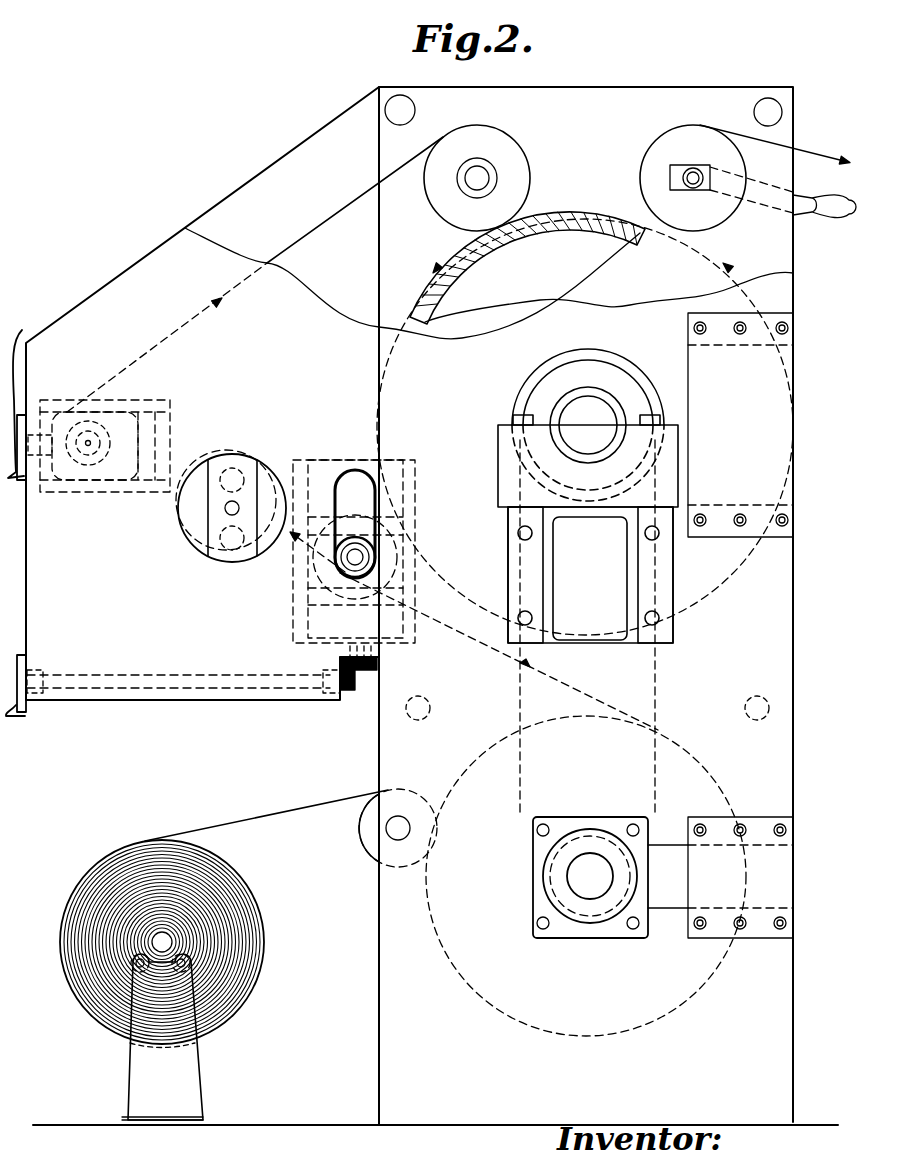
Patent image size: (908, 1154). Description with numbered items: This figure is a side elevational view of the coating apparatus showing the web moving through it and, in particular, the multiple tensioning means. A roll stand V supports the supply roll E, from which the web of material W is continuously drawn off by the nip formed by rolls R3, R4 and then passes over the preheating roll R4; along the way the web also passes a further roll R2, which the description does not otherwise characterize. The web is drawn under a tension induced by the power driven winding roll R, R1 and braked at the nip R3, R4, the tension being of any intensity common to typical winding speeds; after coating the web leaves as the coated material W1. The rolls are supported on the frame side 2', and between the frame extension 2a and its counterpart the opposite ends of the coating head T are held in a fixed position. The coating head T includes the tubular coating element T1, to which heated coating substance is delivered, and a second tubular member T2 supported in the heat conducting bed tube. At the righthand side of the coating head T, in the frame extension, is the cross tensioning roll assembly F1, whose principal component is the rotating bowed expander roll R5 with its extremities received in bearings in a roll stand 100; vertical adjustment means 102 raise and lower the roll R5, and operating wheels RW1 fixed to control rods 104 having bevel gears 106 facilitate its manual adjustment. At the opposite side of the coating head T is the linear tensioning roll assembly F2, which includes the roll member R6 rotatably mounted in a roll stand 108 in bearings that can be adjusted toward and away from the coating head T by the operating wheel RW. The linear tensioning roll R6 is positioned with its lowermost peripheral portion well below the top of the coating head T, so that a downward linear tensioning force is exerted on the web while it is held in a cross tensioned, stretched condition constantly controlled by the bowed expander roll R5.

The frame side 2' is at (435, 606).
The frame extension 2a is at (230, 645).
The winding roll R1 is at (512, 167).
The roller R2 is at (405, 857).
The nip roll R3 is at (663, 142).
The preheating roll R4 is at (670, 737).
The bowed expander roll R5 is at (357, 520).
The linear tensioning roll R6 is at (135, 437).
The winding roll R is at (570, 213).
The web of material W is at (275, 815).
The coated material W1 is at (325, 228).
The coating head T is at (232, 448).
The tubular coating element T1 is at (247, 446).
The second tubular member T2 is at (222, 565).
The cross tensioning roll assembly F1 is at (338, 456).
The linear tensioning roll assembly F2 is at (115, 387).
The operating wheel RW is at (29, 394).
The operating wheels RW1 is at (22, 712).
The supply roll E is at (222, 1007).
The roll stand V is at (185, 1085).
The roll stand 100 is at (397, 645).
The vertical adjustment means 102 is at (357, 615).
The control rods 104 is at (155, 688).
The bevel gears 106 is at (348, 700).
The roll stand 108 is at (67, 400).